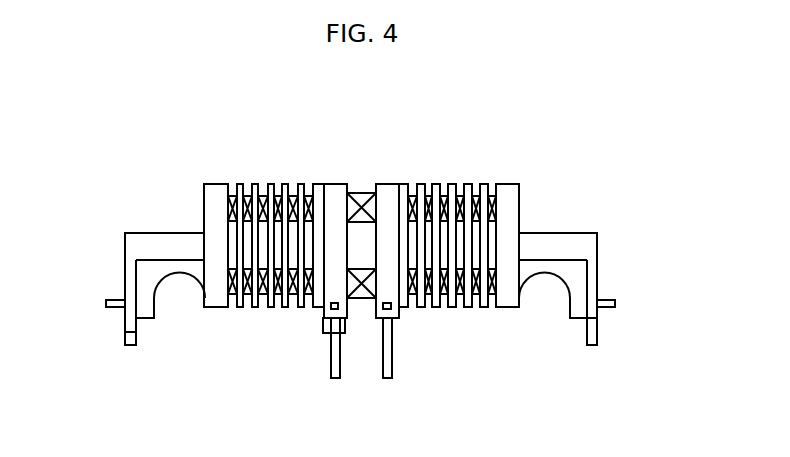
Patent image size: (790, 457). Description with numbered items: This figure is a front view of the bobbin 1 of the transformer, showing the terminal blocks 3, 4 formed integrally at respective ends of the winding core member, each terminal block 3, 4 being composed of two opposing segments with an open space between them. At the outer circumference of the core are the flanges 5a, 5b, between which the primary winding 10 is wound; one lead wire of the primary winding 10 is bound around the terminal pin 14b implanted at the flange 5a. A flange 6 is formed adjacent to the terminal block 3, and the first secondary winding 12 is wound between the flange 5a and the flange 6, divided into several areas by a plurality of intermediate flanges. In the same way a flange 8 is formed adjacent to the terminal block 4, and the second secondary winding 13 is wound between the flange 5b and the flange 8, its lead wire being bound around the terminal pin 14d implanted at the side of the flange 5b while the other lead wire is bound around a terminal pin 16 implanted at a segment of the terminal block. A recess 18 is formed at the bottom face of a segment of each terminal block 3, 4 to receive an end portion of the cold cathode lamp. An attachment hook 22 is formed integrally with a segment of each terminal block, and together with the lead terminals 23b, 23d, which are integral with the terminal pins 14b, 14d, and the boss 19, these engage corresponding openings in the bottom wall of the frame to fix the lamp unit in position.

The bobbin 1 is at (682, 188).
The terminal block 3 is at (130, 247).
The terminal block 4 is at (590, 247).
The flange 5a is at (332, 183).
The flange 5b is at (388, 190).
The flange 6 is at (215, 184).
The flange 8 is at (510, 190).
The primary winding 10 is at (359, 196).
The first secondary winding 12 is at (278, 192).
The second secondary winding 13 is at (459, 192).
The terminal pin 14b is at (330, 308).
The terminal pin 14d is at (392, 309).
The terminal pin 16 is at (105, 302).
The recess 18 is at (178, 297).
The boss 19 is at (347, 330).
The attachment hook 22 is at (127, 337).
The lead terminal 23b is at (330, 362).
The lead terminal 23d is at (392, 362).